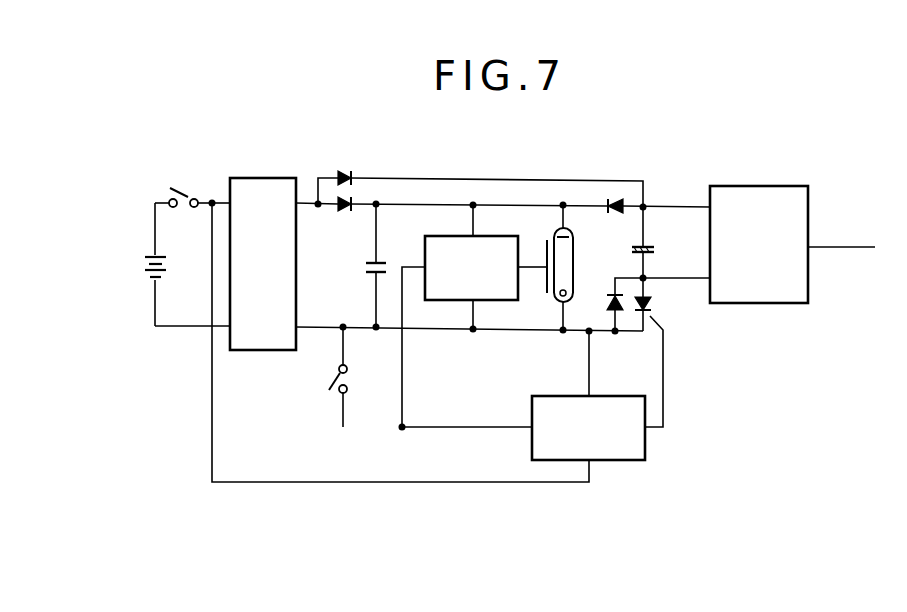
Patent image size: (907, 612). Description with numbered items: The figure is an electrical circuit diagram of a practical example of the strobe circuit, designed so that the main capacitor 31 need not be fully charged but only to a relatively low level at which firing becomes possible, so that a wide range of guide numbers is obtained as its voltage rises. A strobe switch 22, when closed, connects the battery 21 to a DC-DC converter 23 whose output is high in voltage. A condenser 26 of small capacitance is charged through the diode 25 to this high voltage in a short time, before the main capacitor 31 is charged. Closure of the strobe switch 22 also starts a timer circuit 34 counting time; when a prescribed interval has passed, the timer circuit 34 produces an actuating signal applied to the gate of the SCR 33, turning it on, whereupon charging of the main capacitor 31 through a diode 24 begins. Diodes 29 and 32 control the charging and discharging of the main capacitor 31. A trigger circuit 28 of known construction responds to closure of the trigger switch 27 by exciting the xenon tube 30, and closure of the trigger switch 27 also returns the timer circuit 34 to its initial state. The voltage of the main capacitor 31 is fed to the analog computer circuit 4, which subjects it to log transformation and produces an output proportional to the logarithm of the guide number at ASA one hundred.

The analog computer circuit 4 is at (775, 186).
The battery 21 is at (150, 256).
The strobe switch 22 is at (180, 192).
The DC-DC converter 23 is at (263, 178).
The diode 24 is at (341, 172).
The diode 25 is at (344, 212).
The condenser 26 is at (368, 268).
The trigger switch 27 is at (347, 381).
The trigger circuit 28 is at (425, 250).
The diode 29 is at (614, 212).
The xenon tube 30 is at (552, 294).
The main capacitor 31 is at (654, 250).
The diode 32 is at (607, 302).
The SCR 33 is at (652, 307).
The timer circuit 34 is at (612, 396).